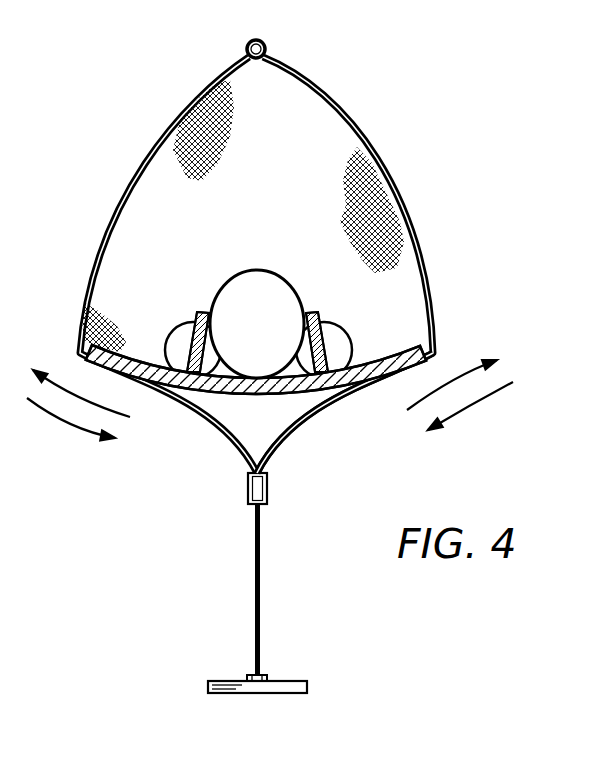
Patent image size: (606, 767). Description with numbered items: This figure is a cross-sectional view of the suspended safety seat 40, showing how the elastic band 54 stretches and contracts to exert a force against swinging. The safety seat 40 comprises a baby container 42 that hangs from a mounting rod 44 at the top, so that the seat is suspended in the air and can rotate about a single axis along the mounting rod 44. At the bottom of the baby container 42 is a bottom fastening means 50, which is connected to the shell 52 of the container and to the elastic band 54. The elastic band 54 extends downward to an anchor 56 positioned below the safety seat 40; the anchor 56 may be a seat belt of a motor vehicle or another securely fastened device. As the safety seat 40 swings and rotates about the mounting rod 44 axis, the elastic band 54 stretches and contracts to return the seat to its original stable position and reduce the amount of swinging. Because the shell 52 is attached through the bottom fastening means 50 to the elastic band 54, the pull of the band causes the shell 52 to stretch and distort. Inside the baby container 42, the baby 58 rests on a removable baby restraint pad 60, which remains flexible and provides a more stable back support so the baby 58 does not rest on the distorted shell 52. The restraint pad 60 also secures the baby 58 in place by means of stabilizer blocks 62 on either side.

The safety seat 40 is at (270, 357).
The baby container 42 is at (403, 227).
The mounting rod 44 is at (245, 46).
The bottom fastening means 50 is at (130, 180).
The shell 52 is at (305, 418).
The elastic band 54 is at (262, 593).
The anchor 56 is at (292, 687).
The baby 58 is at (233, 283).
The baby restraint pad 60 is at (405, 343).
The stabilizer blocks 62 is at (192, 320).